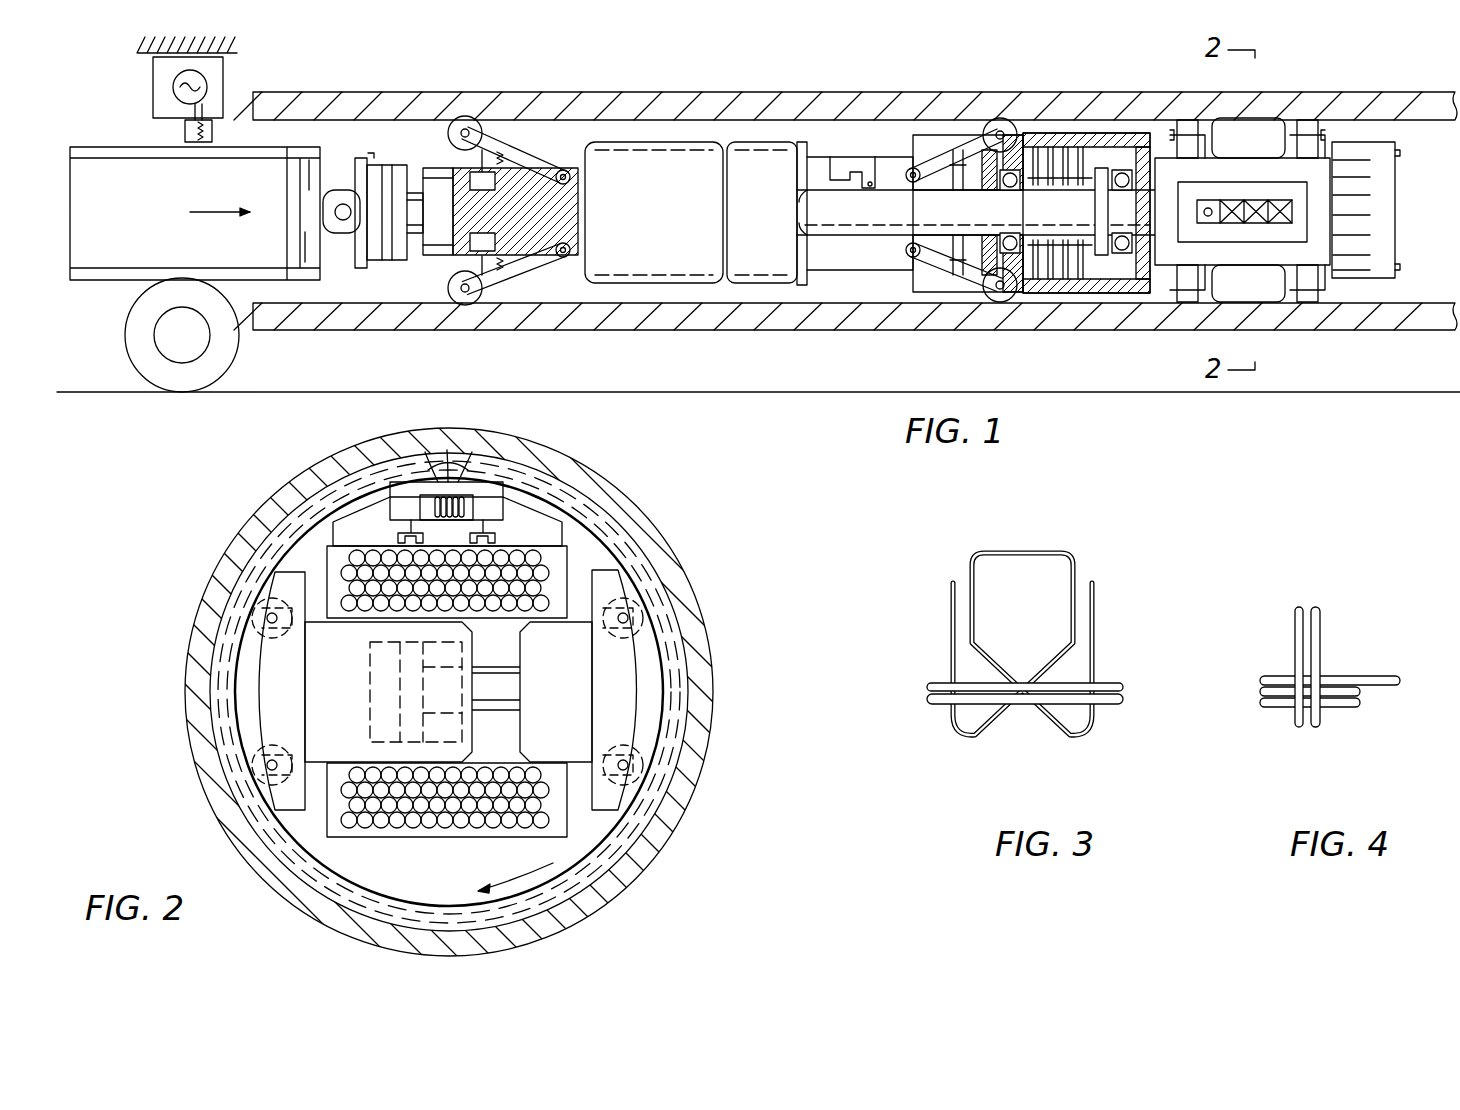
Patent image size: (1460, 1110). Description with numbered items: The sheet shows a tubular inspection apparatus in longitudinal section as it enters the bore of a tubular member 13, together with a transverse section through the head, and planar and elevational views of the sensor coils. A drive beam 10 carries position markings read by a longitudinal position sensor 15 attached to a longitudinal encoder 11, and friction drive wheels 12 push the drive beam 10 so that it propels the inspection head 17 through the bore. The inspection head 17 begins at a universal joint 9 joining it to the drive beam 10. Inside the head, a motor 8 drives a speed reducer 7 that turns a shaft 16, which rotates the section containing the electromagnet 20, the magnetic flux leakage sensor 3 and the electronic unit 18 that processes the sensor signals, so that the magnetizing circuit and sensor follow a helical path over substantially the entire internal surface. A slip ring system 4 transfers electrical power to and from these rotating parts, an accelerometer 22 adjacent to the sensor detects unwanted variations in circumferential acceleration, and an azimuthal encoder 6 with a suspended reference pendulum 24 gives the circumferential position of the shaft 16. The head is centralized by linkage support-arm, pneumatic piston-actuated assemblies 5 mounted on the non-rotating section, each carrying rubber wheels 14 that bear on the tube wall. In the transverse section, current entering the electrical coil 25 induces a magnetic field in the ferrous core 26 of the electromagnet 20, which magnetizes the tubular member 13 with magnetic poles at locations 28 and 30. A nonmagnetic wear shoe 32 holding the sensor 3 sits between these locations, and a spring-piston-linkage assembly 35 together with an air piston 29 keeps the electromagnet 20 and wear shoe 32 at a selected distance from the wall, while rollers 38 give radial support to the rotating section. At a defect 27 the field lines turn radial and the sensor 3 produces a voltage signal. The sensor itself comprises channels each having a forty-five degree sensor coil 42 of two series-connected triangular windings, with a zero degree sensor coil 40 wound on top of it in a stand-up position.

In FIG. 1, the magnetic flux leakage sensor 3 is at (1292, 213).
In FIG. 2, the magnetic flux leakage sensor 3 is at (465, 490).
In FIG. 1, the slip ring system 4 is at (1100, 140).
In FIG. 1, the linkage support-arm, pneumatic piston-actuated assembly 5 is at (522, 160).
In FIG. 1, the azimuthal encoder 6 is at (843, 165).
In FIG. 1, the speed reducer 7 is at (765, 262).
In FIG. 1, the motor 8 is at (642, 268).
In FIG. 1, the universal joint 9 is at (343, 207).
In FIG. 1, the drive beam 10 is at (117, 253).
In FIG. 1, the longitudinal encoder 11 is at (225, 85).
In FIG. 1, the friction drive wheel 12 is at (178, 350).
In FIG. 1, the tubular member 13 is at (650, 95).
In FIG. 2, the tubular member 13 is at (623, 507).
In FIG. 1, the rubber wheel 14 is at (462, 128).
In FIG. 1, the longitudinal position sensor 15 is at (185, 135).
In FIG. 1, the shaft 16 is at (888, 215).
In FIG. 1, the inspection head 17 is at (1108, 296).
In FIG. 1, the electronic unit 18 is at (1350, 195).
In FIG. 1, the electromagnet 20 is at (1265, 128).
In FIG. 2, the electromagnet 20 is at (285, 585).
In FIG. 1, the accelerometer 22 is at (1160, 205).
In FIG. 1, the reference pendulum 24 is at (875, 175).
In FIG. 2, the electrical coil 25 is at (397, 573).
In FIG. 2, the ferrous core 26 is at (350, 666).
In FIG. 2, the defect 27 is at (448, 462).
In FIG. 2, the magnetic pole location 28 is at (265, 688).
In FIG. 2, the air piston 29 is at (422, 690).
In FIG. 2, the magnetic pole location 30 is at (640, 690).
In FIG. 2, the nonmagnetic wear shoe 32 is at (493, 500).
In FIG. 2, the spring-piston-linkage assembly 35 is at (490, 530).
In FIG. 1, the roller 38 is at (1187, 300).
In FIG. 2, the roller 38 is at (268, 618).
In FIG. 3, the 0° sensor coil 40 is at (1124, 690).
In FIG. 4, the 0° sensor coil 40 is at (1320, 667).
In FIG. 3, the 45° sensor coil 42 is at (1097, 730).
In FIG. 4, the 45° sensor coil 42 is at (1360, 697).